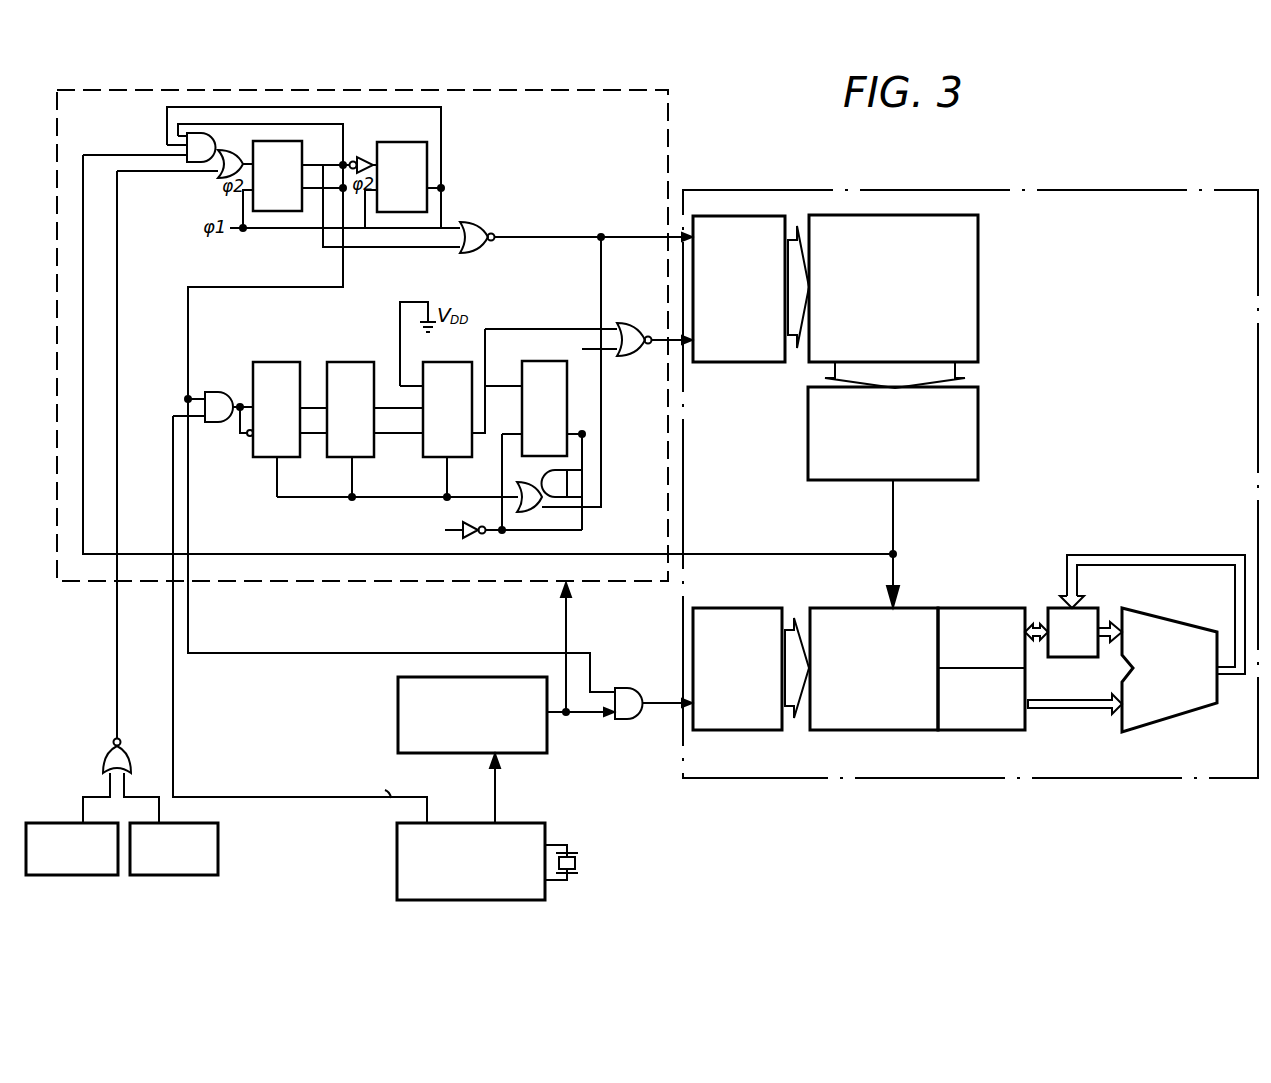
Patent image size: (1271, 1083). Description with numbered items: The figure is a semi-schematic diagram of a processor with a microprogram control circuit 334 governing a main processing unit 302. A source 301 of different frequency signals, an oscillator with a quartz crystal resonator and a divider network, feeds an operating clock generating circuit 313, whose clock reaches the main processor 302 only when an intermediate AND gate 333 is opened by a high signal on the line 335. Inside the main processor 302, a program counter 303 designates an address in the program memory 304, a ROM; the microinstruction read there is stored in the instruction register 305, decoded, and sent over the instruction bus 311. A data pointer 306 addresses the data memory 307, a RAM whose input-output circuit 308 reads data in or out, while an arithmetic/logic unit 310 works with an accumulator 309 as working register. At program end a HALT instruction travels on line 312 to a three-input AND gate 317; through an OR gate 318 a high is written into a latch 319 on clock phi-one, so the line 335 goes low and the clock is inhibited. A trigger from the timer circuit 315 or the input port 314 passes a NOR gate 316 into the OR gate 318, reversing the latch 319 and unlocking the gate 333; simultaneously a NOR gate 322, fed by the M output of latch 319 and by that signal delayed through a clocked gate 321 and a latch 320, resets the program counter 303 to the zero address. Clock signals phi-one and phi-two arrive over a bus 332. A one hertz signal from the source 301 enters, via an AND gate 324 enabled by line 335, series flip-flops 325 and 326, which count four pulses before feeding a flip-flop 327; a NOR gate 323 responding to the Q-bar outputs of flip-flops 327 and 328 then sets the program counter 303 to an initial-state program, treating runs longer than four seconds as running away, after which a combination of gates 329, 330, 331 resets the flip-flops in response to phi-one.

The source of different frequency signals 301 is at (560, 812).
The main processing unit 302 is at (1246, 192).
The program counter 303 is at (785, 212).
The program memory 304 is at (975, 262).
The instruction register 305 is at (978, 445).
The data pointer 306 is at (756, 607).
The data memory 307 is at (912, 618).
The input-output circuit 308 is at (1011, 607).
The accumulator 309 is at (1093, 604).
The arithmetic/logic unit 310 is at (1201, 610).
The instruction bus 311 is at (894, 528).
The line 312 is at (855, 555).
The operating clock generating circuit 313 is at (398, 708).
The external trigger signal input port 314 is at (57, 823).
The timer circuit 315 is at (218, 831).
The NOR gate 316 is at (120, 754).
The AND gate 317 is at (216, 136).
The OR gate 318 is at (233, 151).
The latch 319 is at (302, 150).
The latch 320 is at (408, 148).
The clocked gate 321 is at (365, 151).
The NOR gate 322 is at (472, 221).
The NOR gate 323 is at (625, 316).
The AND gate 324 is at (223, 386).
The flip-flop 325 is at (291, 353).
The flip-flop 326 is at (361, 353).
The flip-flop 327 is at (467, 360).
The flip-flop 328 is at (557, 350).
The gate 329 is at (567, 483).
The gate 330 is at (527, 489).
The gate 331 is at (481, 519).
The bus 332 is at (569, 624).
The AND gate 333 is at (628, 688).
The microprogram control circuit 334 is at (670, 127).
The line 335 is at (449, 654).